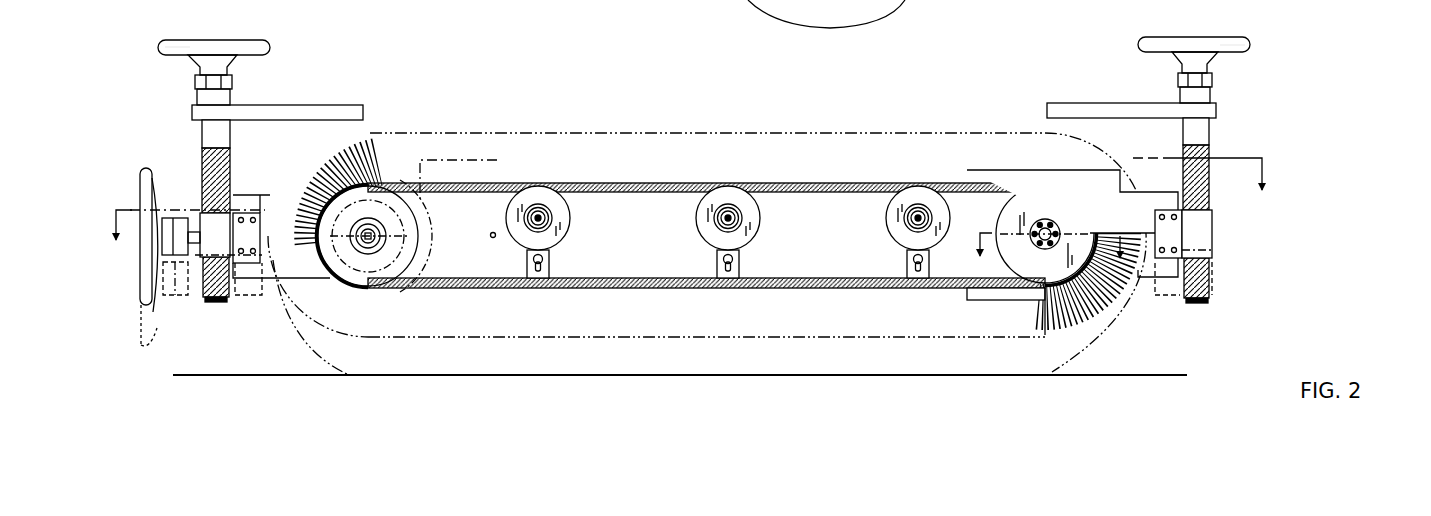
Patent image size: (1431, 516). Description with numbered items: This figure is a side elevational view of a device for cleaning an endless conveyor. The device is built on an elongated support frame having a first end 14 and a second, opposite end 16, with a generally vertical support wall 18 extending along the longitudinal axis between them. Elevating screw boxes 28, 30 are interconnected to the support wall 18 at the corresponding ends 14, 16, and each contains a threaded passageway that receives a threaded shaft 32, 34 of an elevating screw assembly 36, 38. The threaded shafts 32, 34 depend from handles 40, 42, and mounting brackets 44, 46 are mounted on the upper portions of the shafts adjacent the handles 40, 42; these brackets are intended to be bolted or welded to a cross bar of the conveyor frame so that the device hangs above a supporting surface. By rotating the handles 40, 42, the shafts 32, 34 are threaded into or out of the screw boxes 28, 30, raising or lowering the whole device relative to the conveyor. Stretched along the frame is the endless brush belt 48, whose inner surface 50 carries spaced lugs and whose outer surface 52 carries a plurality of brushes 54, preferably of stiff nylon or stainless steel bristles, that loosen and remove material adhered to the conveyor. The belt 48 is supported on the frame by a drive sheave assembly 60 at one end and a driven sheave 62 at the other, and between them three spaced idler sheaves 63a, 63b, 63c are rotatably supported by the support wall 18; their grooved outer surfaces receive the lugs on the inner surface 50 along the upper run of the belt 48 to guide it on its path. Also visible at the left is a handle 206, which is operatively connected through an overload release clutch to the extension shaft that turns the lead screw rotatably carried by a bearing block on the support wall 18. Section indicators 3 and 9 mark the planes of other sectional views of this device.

The section line 3- 3 is at (688, 186).
The section line 9- 9 is at (1049, 233).
The first end 14 is at (244, 188).
The second end 16 is at (1161, 186).
The support wall 18 is at (258, 330).
The elevating screw box 28 is at (210, 222).
The elevating screw box 30 is at (1207, 228).
The threaded shaft 32 is at (201, 167).
The threaded shaft 34 is at (1209, 172).
The elevating screw assembly 36 is at (268, 35).
The elevating screw assembly 38 is at (1136, 51).
The handle 40 is at (167, 47).
The handle 42 is at (1237, 52).
The mounting bracket 44 is at (280, 105).
The mounting bracket 46 is at (1072, 105).
The endless brush belt 48 is at (568, 183).
The inner surface 50 is at (806, 194).
The outer surface 52 is at (605, 183).
The brushes 54 is at (1083, 325).
The drive sheave assembly 60 is at (998, 265).
The driven sheave 62 is at (420, 259).
The idler sheave 63a is at (566, 246).
The idler sheave 63b is at (694, 228).
The idler sheave 63c is at (885, 233).
The handle 206 is at (139, 166).